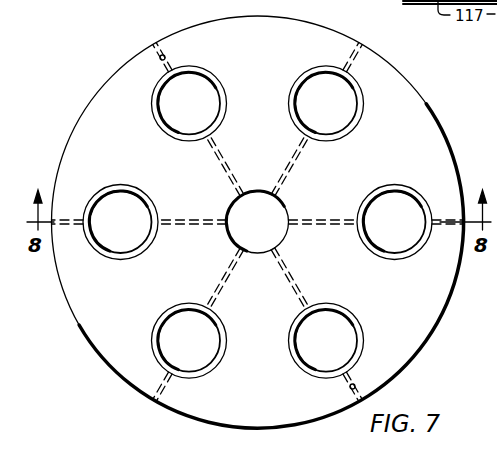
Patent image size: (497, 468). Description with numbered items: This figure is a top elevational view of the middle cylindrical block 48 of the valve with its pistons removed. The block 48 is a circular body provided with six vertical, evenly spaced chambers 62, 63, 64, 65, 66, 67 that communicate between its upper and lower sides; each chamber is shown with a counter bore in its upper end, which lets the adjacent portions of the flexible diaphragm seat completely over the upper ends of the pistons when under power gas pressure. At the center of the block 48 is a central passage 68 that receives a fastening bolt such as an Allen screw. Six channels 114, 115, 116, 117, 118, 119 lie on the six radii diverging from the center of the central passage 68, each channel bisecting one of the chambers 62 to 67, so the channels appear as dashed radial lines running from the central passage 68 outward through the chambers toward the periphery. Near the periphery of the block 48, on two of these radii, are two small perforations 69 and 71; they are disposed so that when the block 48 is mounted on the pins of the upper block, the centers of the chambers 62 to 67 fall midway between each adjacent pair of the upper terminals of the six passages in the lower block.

The middle block 48 is at (190, 27).
The chamber 62 is at (418, 198).
The chamber 63 is at (364, 105).
The chamber 64 is at (153, 103).
The chamber 65 is at (108, 257).
The chamber 66 is at (196, 378).
The chamber 67 is at (361, 341).
The central passage 68 is at (284, 208).
The perforation 69 is at (355, 384).
The perforation 71 is at (166, 56).
The channel 114 is at (338, 226).
The channel 115 is at (298, 165).
The channel 116 is at (224, 164).
The channel 117 is at (183, 227).
The channel 118 is at (220, 298).
The channel 119 is at (295, 283).